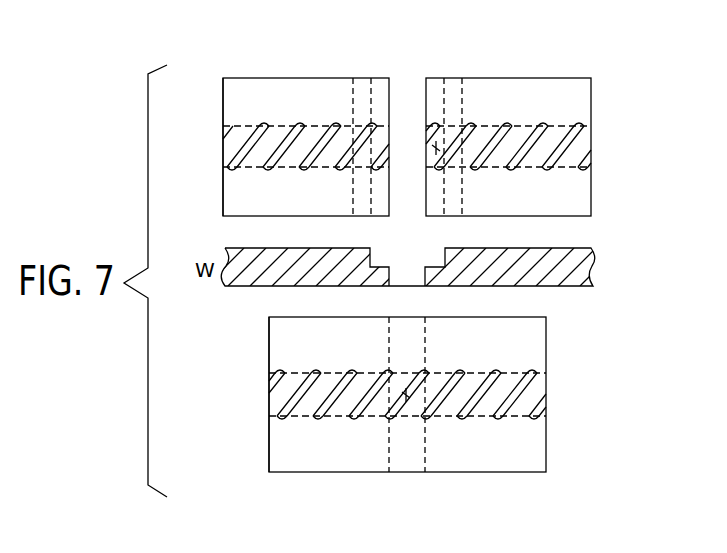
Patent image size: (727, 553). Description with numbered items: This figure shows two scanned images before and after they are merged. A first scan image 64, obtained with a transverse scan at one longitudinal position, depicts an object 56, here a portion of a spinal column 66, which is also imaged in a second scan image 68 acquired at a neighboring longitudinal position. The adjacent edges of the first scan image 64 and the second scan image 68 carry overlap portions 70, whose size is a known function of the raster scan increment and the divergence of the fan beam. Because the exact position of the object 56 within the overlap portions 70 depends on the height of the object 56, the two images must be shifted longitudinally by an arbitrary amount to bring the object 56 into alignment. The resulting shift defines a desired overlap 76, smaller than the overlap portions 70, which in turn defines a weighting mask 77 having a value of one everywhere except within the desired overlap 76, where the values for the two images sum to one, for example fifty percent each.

The first scan image 64 is at (586, 78).
The second scan image 68 is at (223, 88).
The spinal column 66 is at (245, 143).
The object 56 is at (435, 143).
The overlap portions 70 is at (353, 53).
The desired overlap 76 is at (372, 68).
The weighting mask 77 is at (590, 268).